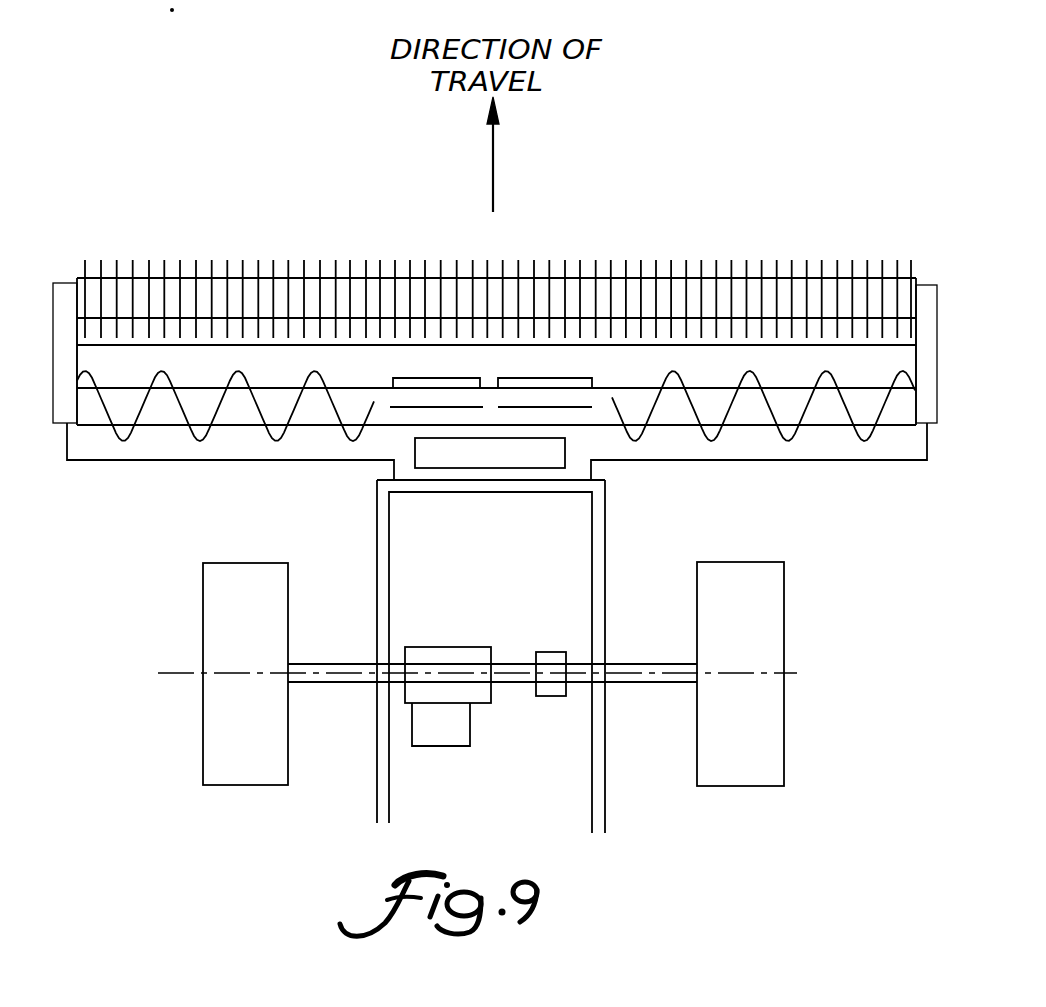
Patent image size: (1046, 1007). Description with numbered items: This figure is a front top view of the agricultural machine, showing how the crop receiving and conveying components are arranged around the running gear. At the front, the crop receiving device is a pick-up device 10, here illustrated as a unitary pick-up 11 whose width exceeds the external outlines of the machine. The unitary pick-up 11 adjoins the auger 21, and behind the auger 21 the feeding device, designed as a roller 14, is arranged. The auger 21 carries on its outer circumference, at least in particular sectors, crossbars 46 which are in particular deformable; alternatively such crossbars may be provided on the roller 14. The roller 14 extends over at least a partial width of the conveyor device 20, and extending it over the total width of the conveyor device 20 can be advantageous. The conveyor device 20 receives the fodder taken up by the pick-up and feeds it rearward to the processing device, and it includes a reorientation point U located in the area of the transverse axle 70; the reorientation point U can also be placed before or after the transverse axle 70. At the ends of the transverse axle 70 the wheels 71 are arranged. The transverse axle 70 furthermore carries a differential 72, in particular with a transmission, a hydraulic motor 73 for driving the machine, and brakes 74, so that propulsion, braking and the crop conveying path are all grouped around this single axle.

The pick-up device 10 is at (125, 460).
The unitary pick-up 11 is at (493, 251).
The roller 14 is at (432, 458).
The conveyor device 20 is at (605, 538).
The auger 21 is at (243, 417).
The crossbars 46 is at (552, 378).
The transverse axle 70 is at (343, 682).
The wheels 71 is at (288, 600).
The differential 72 is at (458, 647).
The hydraulic motor 73 is at (448, 738).
The brakes 74 is at (552, 696).
The reorientation point U is at (612, 660).